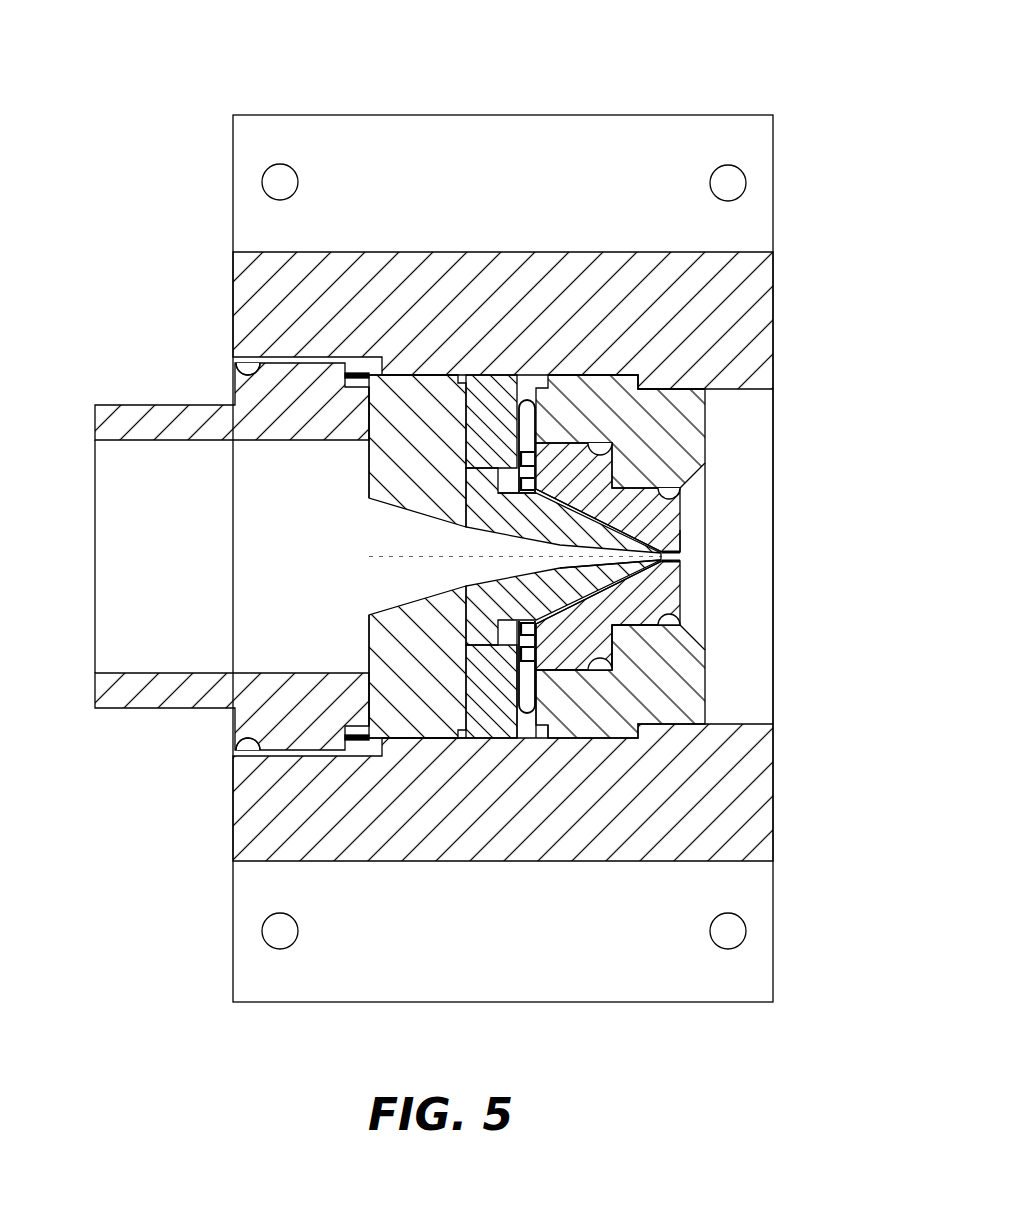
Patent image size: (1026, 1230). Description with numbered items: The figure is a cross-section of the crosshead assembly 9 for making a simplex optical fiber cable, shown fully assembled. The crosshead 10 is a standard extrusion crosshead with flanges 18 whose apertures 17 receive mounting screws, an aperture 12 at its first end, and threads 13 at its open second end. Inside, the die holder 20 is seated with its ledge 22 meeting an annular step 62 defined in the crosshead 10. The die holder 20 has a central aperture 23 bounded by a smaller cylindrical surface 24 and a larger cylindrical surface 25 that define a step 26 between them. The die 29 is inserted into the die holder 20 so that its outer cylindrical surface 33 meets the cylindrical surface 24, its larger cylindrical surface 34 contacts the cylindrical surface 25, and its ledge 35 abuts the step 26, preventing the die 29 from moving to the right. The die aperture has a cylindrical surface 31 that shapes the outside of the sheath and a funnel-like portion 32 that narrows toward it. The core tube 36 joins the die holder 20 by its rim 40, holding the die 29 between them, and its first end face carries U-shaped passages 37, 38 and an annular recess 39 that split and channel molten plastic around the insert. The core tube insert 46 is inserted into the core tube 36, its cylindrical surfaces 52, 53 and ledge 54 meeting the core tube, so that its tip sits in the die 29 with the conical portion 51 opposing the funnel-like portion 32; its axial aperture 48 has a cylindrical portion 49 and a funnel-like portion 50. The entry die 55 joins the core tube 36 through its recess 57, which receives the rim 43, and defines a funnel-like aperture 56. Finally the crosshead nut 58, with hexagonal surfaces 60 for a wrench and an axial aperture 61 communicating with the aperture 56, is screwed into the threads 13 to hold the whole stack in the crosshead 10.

The crosshead assembly 9 is at (466, 80).
The crosshead 10 is at (816, 140).
The aperture 12 is at (748, 574).
The threads 13 is at (243, 378).
The apertures 17 is at (278, 178).
The flanges 18 is at (637, 155).
The die holder 20 is at (648, 458).
The ledge 22 is at (642, 735).
The aperture 23 is at (708, 574).
The cylindrical surface 24 is at (668, 455).
The cylindrical surface 25 is at (622, 715).
The step 26 is at (627, 640).
The die 29 is at (683, 515).
The cylindrical surface 31 is at (676, 536).
The funnel-like portion 32 is at (665, 590).
The cylindrical surface 33 is at (678, 503).
The cylindrical surface 34 is at (614, 458).
The ledge 35 is at (640, 627).
The core tube 36 is at (558, 560).
The passages 37 is at (528, 412).
The passages 38 is at (538, 690).
The annular recess 39 is at (580, 710).
The rim 40 is at (527, 705).
The rim 43 is at (397, 388).
The core tube insert 46 is at (668, 575).
The aperture 48 is at (511, 572).
The cylindrical portion 49 is at (676, 563).
The funnel-like portion 50 is at (617, 660).
The conical portion 51 is at (655, 600).
The cylindrical surface 52 is at (503, 492).
The cylindrical surface 53 is at (480, 468).
The ledge 54 is at (478, 735).
The entry die 55 is at (422, 385).
The funnel-like aperture 56 is at (430, 572).
The recess 57 is at (392, 738).
The crosshead nut 58 is at (130, 390).
The hexagonal surfaces 60 is at (130, 727).
The aperture 61 is at (233, 572).
The annular step 62 is at (641, 380).